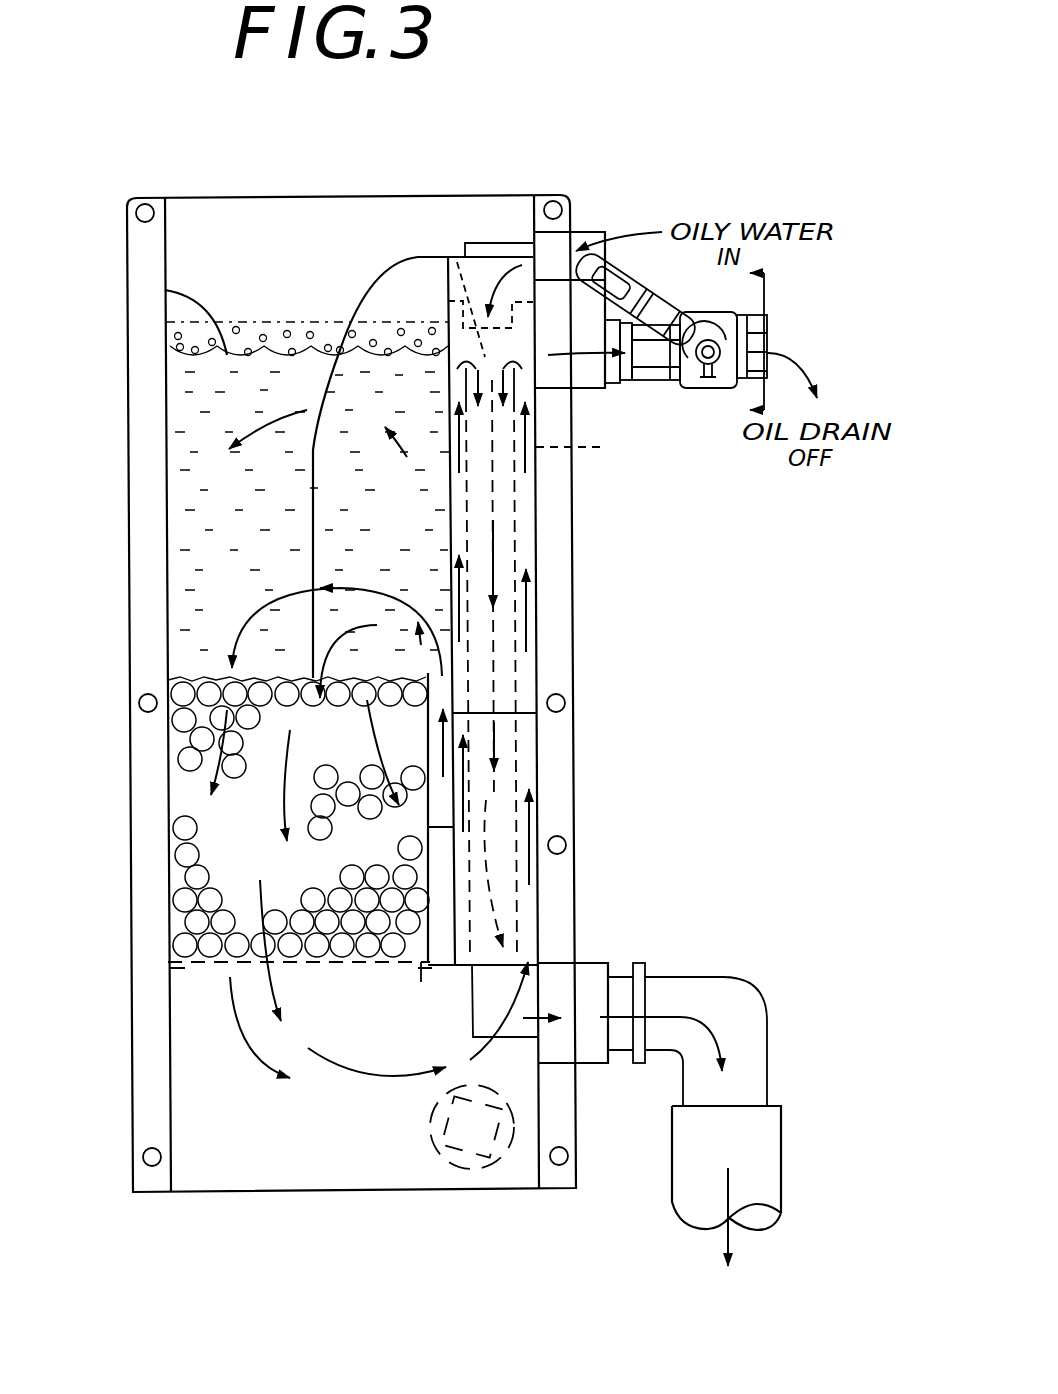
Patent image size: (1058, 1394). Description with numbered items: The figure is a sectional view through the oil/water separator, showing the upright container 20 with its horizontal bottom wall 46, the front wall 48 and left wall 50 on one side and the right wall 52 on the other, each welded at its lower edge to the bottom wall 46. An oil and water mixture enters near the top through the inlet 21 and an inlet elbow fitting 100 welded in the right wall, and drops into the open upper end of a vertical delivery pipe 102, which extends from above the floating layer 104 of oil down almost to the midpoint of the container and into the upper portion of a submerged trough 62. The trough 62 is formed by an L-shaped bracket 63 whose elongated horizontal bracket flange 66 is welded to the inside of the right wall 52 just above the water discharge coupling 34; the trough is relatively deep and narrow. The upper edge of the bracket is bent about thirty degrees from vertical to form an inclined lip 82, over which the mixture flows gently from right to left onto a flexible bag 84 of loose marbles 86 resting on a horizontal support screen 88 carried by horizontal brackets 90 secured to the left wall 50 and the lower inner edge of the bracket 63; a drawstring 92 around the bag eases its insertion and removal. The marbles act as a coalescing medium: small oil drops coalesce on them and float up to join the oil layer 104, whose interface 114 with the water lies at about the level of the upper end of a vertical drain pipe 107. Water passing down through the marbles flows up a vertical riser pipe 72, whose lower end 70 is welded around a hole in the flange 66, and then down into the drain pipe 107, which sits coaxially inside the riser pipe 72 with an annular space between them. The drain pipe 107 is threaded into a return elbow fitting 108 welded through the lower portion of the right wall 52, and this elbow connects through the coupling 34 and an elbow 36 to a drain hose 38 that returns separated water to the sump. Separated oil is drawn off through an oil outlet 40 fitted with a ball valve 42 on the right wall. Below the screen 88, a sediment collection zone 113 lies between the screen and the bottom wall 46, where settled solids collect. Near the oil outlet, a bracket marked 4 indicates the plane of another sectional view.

The upright container 20 is at (466, 191).
The inlet 21 is at (583, 232).
The inlet elbow fitting 100 is at (498, 243).
The drawstring 92 is at (426, 256).
The vertical delivery pipe 102 is at (448, 298).
The interface 114 is at (165, 291).
The layer of oil 104 is at (180, 337).
The front wall 48 is at (167, 468).
The left wall 50 is at (129, 540).
The vertical riser pipe 72 is at (450, 522).
The right wall 52 is at (537, 603).
The flexible bag 84 is at (198, 680).
The inclined lip 82 is at (425, 680).
The L-shaped bracket 63 is at (425, 884).
The submerged trough 62 is at (444, 879).
The loose marbles 86 is at (293, 950).
The horizontal support screen 88 is at (330, 945).
The horizontal brackets 90 is at (176, 970).
The horizontal bracket flange 66 is at (437, 965).
The lower end of riser pipe 70 is at (455, 975).
The return elbow fitting 108 is at (500, 1040).
The sediment collection zone 113 is at (352, 1125).
The horizontal bottom wall 46 is at (287, 1167).
The water discharge coupling 34 is at (592, 963).
The elbow 36 is at (722, 977).
The drain hose 38 is at (781, 1165).
The oil outlet 40 is at (617, 390).
The ball valve 42 is at (707, 393).
The vertical drain pipe 107 is at (612, 444).
The section line 4 is at (742, 348).